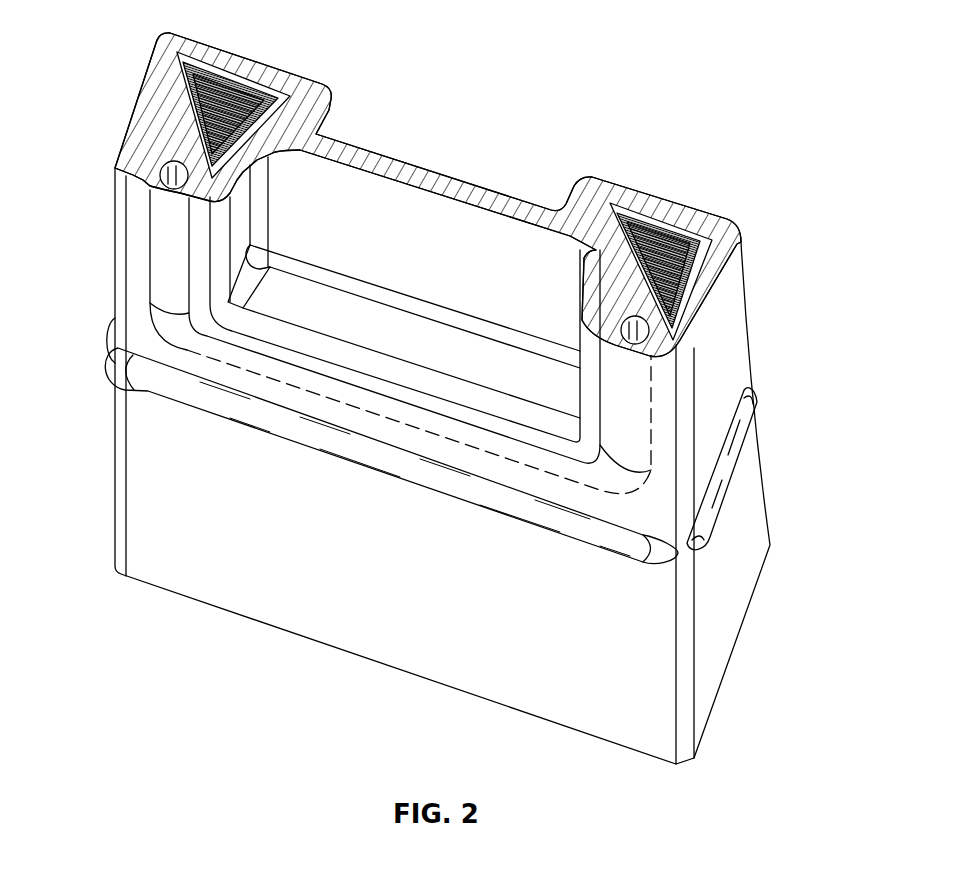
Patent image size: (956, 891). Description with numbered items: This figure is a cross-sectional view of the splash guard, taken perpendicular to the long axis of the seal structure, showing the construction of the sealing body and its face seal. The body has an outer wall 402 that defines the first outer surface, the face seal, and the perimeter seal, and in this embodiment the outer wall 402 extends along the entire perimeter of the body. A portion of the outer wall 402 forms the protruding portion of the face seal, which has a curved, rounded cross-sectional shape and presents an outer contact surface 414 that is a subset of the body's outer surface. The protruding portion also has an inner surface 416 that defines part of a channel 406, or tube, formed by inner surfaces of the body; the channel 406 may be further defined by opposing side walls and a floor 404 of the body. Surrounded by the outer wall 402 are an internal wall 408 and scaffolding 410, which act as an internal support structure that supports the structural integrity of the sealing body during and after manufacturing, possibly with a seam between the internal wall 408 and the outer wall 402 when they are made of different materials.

The outer wall 402 is at (118, 160).
The floor 404 is at (168, 157).
The channel 406 is at (163, 182).
The internal wall 408 is at (137, 158).
The scaffolding 410 is at (200, 100).
The outer contact surface 414 is at (170, 247).
The inner surface 416 is at (172, 193).